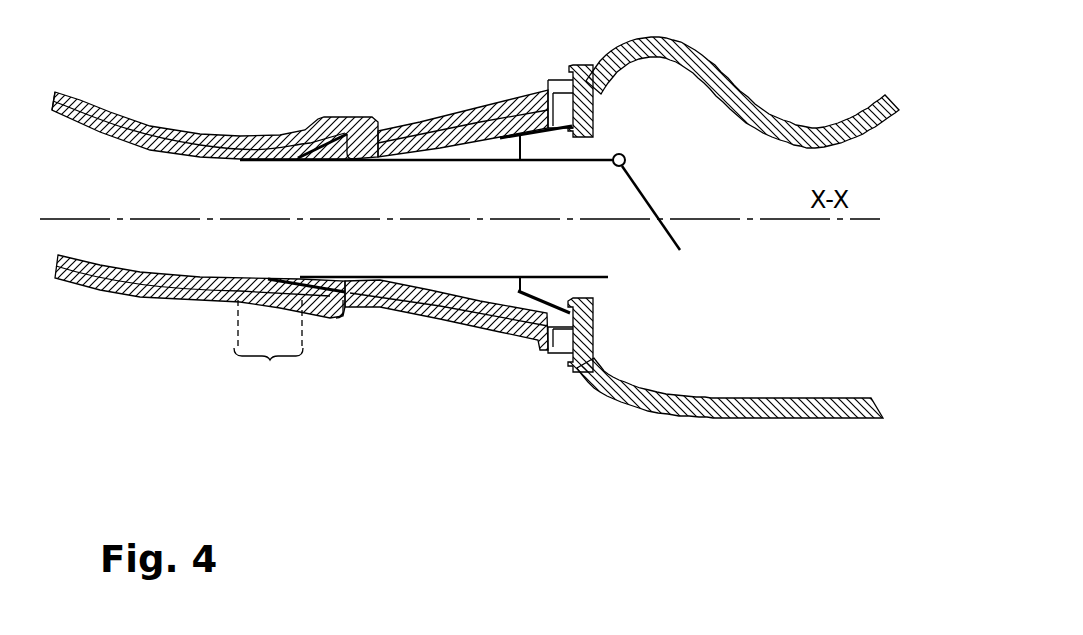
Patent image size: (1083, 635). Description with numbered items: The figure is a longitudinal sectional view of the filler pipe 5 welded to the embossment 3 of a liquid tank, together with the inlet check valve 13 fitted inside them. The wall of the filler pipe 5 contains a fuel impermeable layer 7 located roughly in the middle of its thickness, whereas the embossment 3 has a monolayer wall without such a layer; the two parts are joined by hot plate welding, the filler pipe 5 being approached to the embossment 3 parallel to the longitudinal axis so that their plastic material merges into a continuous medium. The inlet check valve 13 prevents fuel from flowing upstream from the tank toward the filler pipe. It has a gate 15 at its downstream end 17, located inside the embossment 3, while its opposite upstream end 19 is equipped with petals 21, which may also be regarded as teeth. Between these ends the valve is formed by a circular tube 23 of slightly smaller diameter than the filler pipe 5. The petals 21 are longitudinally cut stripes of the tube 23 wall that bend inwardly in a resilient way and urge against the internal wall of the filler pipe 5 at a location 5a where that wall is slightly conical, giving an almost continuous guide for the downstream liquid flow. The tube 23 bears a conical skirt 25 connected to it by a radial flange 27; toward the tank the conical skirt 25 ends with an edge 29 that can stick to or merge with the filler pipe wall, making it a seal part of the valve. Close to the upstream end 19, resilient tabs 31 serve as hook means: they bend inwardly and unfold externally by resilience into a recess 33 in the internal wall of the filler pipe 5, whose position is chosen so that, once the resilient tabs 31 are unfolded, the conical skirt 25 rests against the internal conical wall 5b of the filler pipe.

The embossment 3 is at (750, 70).
The filler pipe 5 is at (398, 97).
The location of slightly conical internal wall 5a is at (268, 344).
The internal conical wall 5b is at (543, 133).
The fuel impermeable layer 7 is at (197, 133).
The inlet check valve 13 is at (480, 150).
The gate 15 is at (645, 190).
The downstream end 17 is at (608, 277).
The upstream end 19 is at (394, 243).
The petals 21 is at (258, 300).
The circular tube 23 is at (440, 277).
The conical skirt 25 is at (533, 140).
The radial flange 27 is at (521, 281).
The edge 29 is at (588, 298).
The resilient tabs 31 is at (330, 318).
The recess 33 is at (307, 157).